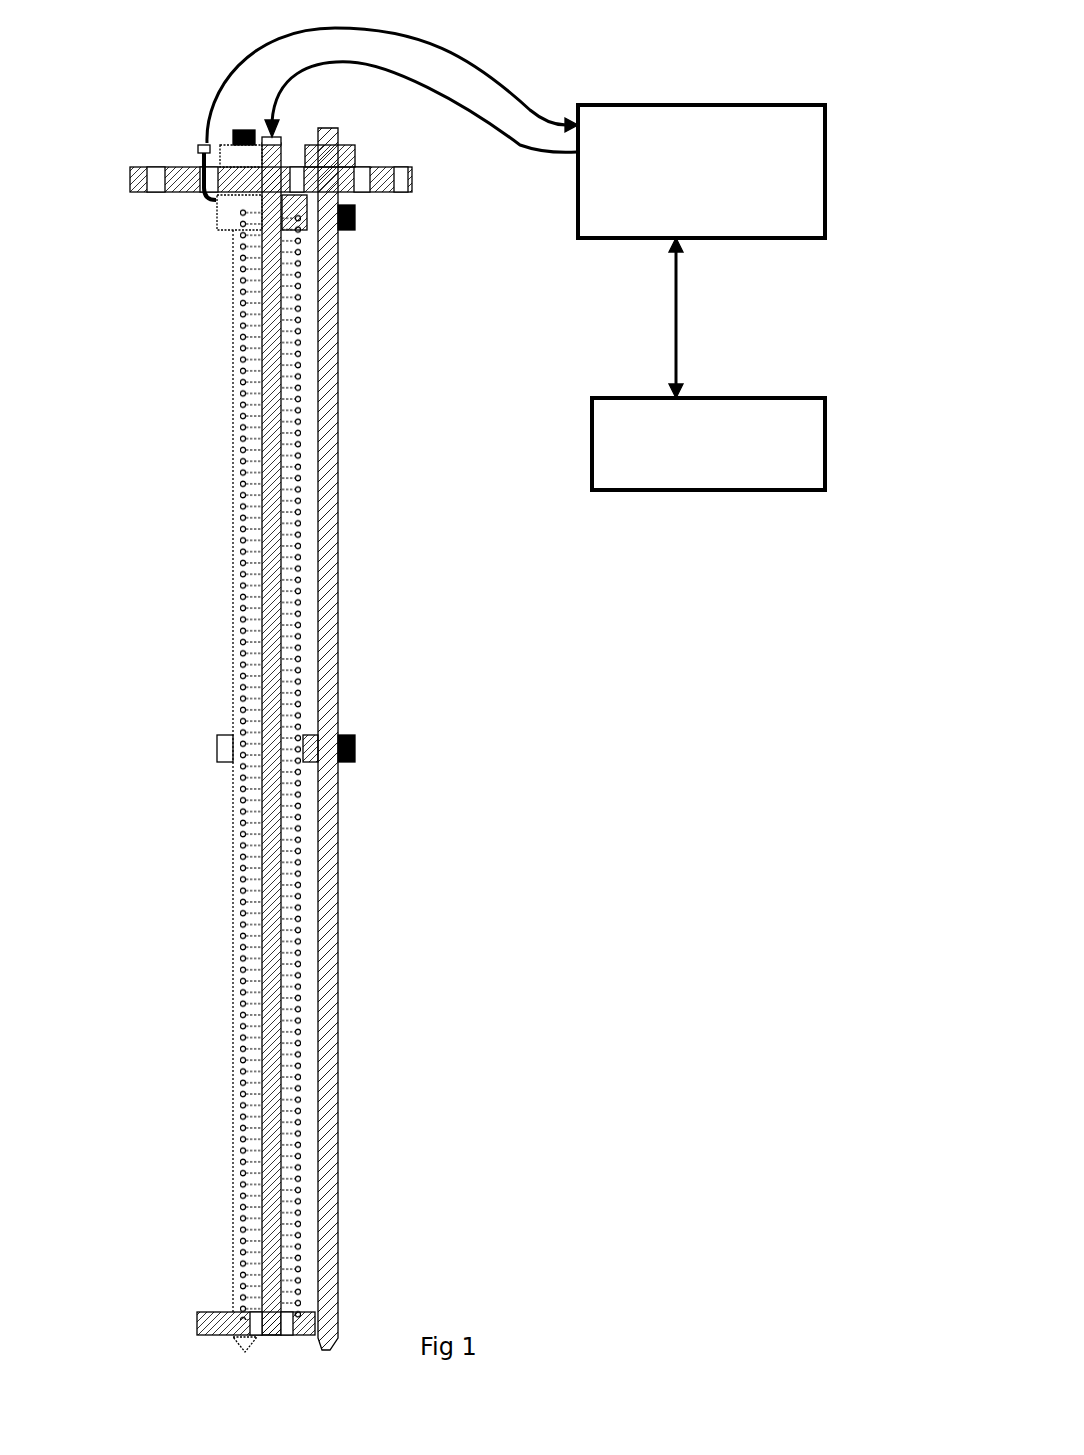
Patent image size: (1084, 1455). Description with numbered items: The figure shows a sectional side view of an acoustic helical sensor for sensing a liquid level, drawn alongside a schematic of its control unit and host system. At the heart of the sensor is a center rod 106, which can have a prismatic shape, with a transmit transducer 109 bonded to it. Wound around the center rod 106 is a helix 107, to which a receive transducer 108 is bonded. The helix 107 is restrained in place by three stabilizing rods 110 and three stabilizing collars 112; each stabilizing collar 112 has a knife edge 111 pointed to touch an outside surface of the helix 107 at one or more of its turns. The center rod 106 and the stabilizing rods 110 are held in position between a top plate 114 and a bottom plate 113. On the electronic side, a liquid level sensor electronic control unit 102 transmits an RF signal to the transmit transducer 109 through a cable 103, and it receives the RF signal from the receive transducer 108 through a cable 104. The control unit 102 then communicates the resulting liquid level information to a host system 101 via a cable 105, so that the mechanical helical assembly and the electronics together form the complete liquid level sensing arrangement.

The host system 101 is at (825, 443).
The liquid level sensor electronic control unit 102 is at (825, 165).
The cable 103 is at (485, 118).
The cable 104 is at (482, 65).
The cable 105 is at (676, 322).
The center rod 106 is at (270, 400).
The helix 107 is at (300, 483).
The receive transducer 108 is at (199, 145).
The transmit transducer 109 is at (268, 137).
The stabilizing rods 110 is at (333, 600).
The knife edge 111 is at (303, 748).
The stabilizing collars 112 is at (350, 765).
The bottom plate 113 is at (208, 1320).
The top plate 114 is at (170, 192).